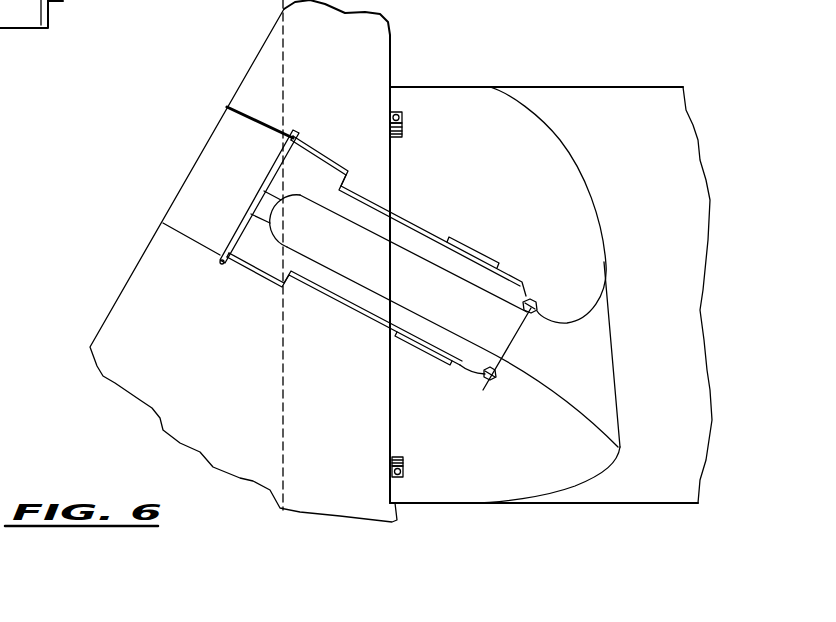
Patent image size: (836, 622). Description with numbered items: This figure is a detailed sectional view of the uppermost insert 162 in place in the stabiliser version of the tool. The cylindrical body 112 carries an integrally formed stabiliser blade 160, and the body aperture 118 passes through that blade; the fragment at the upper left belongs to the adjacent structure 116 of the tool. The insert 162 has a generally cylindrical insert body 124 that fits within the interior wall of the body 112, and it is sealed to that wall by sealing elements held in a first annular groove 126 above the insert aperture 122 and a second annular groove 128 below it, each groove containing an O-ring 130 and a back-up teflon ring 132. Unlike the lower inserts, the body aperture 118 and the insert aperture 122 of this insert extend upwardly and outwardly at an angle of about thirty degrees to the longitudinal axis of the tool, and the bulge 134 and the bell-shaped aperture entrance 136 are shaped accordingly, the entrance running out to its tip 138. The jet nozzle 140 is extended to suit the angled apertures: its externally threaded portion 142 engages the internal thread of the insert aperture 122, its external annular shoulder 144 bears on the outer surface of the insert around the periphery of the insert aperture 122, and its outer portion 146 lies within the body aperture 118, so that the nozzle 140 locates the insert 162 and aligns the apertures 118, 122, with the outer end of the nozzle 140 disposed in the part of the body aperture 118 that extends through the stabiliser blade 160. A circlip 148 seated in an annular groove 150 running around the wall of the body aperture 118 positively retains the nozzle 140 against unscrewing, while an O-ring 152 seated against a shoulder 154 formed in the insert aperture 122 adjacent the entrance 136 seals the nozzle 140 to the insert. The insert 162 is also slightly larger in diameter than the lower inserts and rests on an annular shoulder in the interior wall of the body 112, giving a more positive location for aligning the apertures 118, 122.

The cylindrical body 112 is at (367, 53).
The adjacent structure 116 is at (64, 14).
The body aperture 118 is at (165, 224).
The insert aperture 122 is at (462, 373).
The insert body 124 is at (524, 87).
The first annular groove 126 is at (404, 122).
The second annular groove 128 is at (404, 468).
The O-ring 130 is at (391, 118).
The back-up teflon ring 132 is at (389, 128).
The bulge 134 is at (560, 172).
The aperture entrance 136 is at (593, 347).
The cam tip 138 is at (610, 462).
The jet nozzle 140 is at (433, 222).
The externally threaded portion 142 is at (478, 250).
The external annular shoulder 144 is at (362, 186).
The outer portion 146 is at (258, 262).
The circlip 148 is at (260, 192).
The annular groove 150 is at (220, 270).
The O-ring 152 is at (491, 380).
The shoulder 154 is at (500, 372).
The stabiliser blade 160 is at (140, 300).
The uppermost insert 162 is at (647, 46).